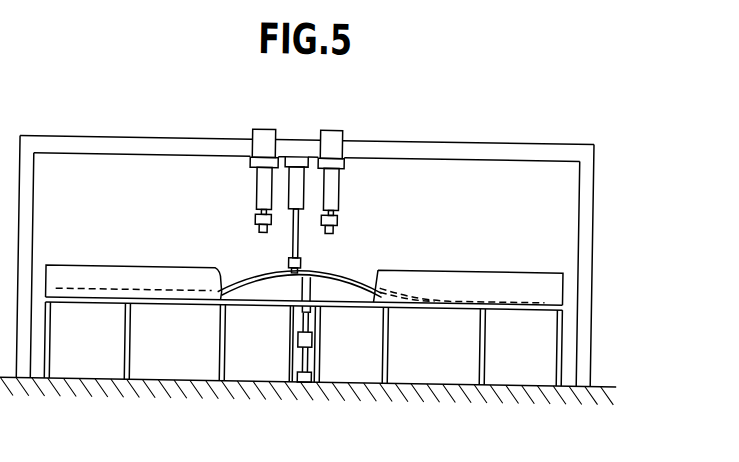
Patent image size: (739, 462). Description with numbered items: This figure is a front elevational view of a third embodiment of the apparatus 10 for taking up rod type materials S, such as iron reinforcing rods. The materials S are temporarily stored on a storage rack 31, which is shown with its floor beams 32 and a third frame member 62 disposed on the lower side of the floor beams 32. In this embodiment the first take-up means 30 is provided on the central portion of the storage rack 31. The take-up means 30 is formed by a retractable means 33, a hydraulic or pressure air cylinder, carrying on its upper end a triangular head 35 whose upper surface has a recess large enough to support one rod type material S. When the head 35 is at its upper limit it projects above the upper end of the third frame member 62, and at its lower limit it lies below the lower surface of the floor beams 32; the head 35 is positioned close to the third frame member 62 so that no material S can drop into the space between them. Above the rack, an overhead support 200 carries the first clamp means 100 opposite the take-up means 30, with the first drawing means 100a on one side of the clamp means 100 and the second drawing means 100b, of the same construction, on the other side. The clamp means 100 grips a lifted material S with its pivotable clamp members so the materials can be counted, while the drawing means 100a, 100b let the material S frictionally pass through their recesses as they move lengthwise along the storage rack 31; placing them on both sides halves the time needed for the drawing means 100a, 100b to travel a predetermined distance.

The apparatus for taking up rod type materials 10 is at (450, 140).
The overhead support beam 200 is at (173, 137).
The first clamp means 100 is at (304, 157).
The first drawing means 100a is at (339, 188).
The second drawing means 100b is at (255, 185).
The rod type material S is at (363, 283).
The storage rack 31 is at (537, 268).
The floor beam 32 is at (186, 306).
The third frame member 62 is at (497, 269).
The triangular head 35 is at (298, 296).
The first take-up means 30 is at (323, 333).
The retractable means 33 is at (311, 358).